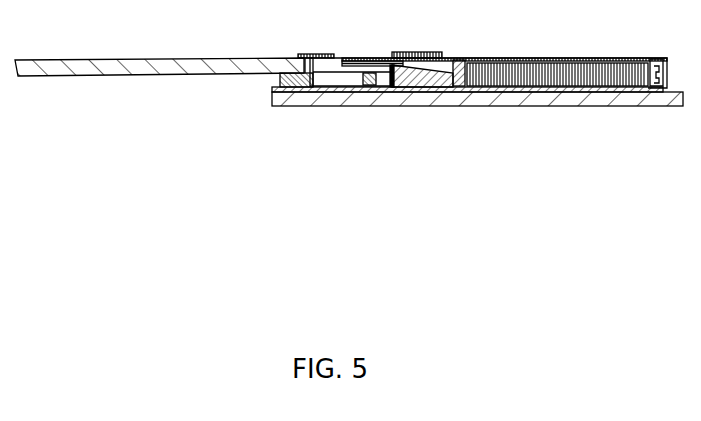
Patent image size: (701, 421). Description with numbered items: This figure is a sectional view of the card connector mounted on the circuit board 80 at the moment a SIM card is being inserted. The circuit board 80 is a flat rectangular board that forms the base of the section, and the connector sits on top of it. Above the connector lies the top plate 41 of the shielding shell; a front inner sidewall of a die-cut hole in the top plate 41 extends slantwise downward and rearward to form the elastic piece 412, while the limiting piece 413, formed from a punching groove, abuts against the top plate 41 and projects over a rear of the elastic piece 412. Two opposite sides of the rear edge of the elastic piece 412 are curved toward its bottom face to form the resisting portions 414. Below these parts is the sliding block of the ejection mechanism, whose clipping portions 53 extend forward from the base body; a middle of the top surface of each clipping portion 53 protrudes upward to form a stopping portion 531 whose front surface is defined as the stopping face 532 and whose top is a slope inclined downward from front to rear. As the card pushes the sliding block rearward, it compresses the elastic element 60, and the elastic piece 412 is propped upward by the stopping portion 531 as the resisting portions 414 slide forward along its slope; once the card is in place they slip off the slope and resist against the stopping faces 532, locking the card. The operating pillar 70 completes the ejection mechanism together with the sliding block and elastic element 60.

The top plate 41 is at (515, 56).
The elastic piece 412 is at (330, 55).
The limiting piece 413 is at (417, 53).
The resisting portions 414 is at (377, 57).
The clipping portions 53 is at (372, 88).
The stopping portion 531 is at (412, 74).
The stopping face 532 is at (392, 74).
The elastic element 60 is at (612, 90).
The operating pillar 70 is at (133, 71).
The circuit board 80 is at (325, 96).